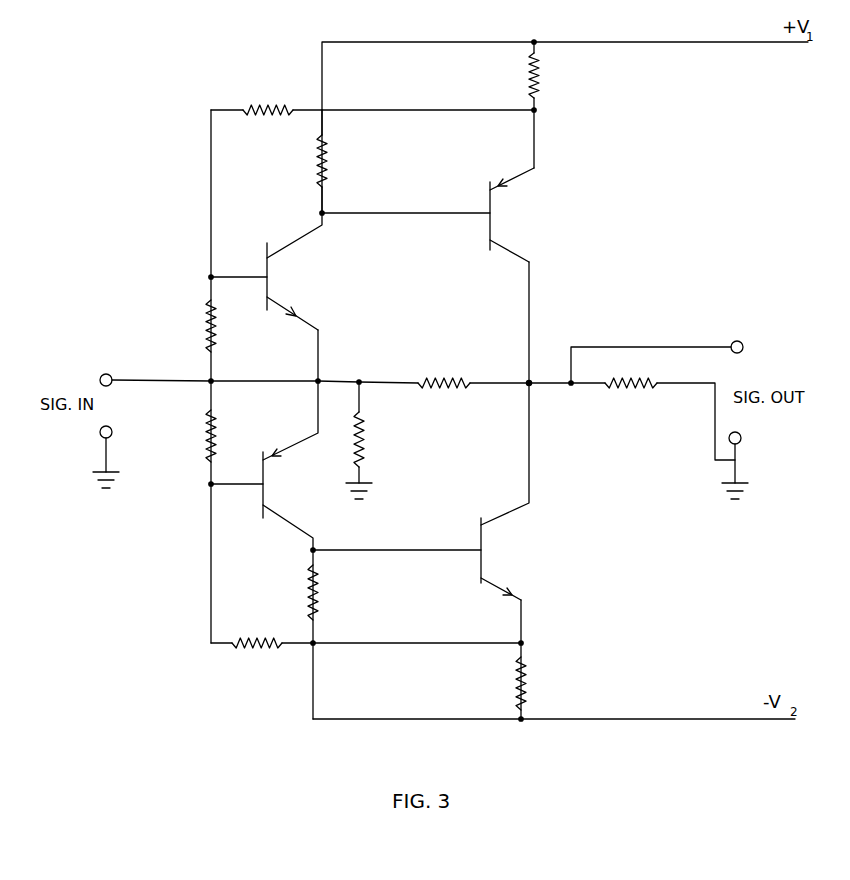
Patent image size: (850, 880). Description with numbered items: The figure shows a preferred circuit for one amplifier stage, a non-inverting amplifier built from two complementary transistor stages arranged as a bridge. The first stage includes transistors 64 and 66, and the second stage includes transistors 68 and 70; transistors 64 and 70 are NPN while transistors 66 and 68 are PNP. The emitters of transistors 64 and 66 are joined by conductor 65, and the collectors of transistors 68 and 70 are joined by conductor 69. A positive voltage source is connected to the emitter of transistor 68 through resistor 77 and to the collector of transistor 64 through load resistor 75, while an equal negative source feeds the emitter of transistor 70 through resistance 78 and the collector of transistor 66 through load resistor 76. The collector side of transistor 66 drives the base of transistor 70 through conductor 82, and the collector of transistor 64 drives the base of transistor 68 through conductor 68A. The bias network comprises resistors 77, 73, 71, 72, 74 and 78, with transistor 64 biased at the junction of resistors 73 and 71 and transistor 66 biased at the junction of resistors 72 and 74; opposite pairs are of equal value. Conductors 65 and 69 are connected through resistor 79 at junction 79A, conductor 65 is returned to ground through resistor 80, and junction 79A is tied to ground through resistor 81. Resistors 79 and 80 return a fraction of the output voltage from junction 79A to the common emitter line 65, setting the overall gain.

The transistor 64 is at (266, 262).
The conductor 65 is at (320, 345).
The transistor 66 is at (262, 472).
The transistor 68 is at (488, 201).
The conductor 68A is at (398, 212).
The conductor 69 is at (531, 283).
The transistor 70 is at (480, 532).
The resistor 71 is at (209, 320).
The resistor 72 is at (209, 422).
The resistor 73 is at (261, 106).
The resistor 74 is at (258, 641).
The resistor 75 is at (325, 160).
The resistor 76 is at (317, 596).
The resistor 77 is at (538, 77).
The resistance 78 is at (524, 681).
The resistor 79 is at (434, 379).
The junction 79A is at (531, 387).
The resistor 80 is at (362, 445).
The resistor 81 is at (633, 382).
The conductor 82 is at (379, 550).